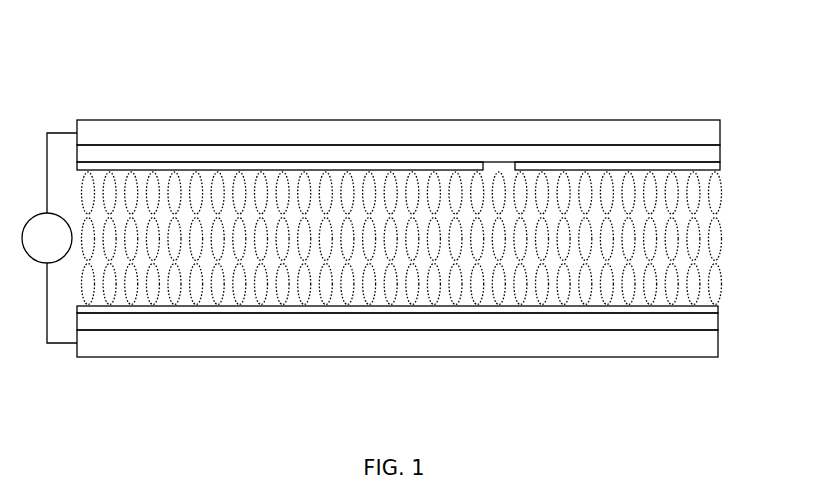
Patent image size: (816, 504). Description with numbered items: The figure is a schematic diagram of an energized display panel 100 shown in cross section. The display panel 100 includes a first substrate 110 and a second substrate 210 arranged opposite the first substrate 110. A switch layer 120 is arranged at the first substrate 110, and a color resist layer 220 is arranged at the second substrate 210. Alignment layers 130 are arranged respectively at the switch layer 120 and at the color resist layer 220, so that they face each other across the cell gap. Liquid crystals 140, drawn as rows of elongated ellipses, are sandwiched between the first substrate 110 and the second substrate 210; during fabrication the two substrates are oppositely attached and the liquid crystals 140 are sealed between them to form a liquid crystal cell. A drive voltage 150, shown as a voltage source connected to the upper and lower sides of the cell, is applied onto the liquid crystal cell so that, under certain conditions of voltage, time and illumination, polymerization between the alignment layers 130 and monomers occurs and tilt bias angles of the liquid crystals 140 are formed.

The display panel 100 is at (115, 95).
The first substrate 110 is at (645, 338).
The switch layer 120 is at (694, 320).
The alignment layers 130 is at (526, 167).
The liquid crystals 140 is at (713, 238).
The drive voltage 150 is at (27, 255).
The second substrate 210 is at (627, 137).
The color resist layer 220 is at (680, 148).